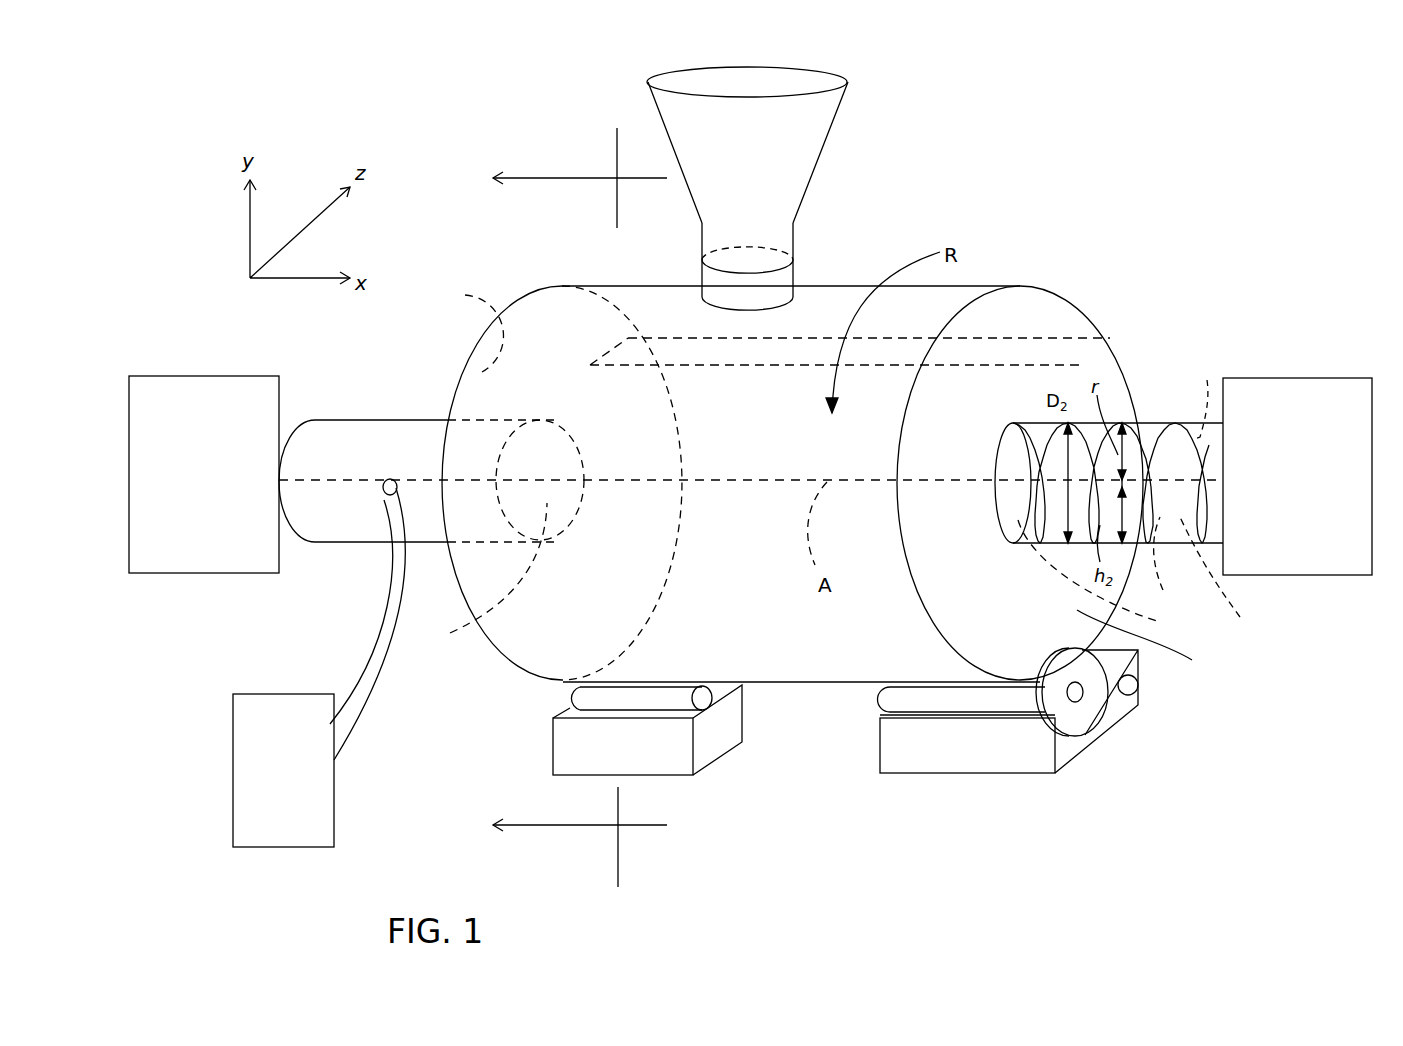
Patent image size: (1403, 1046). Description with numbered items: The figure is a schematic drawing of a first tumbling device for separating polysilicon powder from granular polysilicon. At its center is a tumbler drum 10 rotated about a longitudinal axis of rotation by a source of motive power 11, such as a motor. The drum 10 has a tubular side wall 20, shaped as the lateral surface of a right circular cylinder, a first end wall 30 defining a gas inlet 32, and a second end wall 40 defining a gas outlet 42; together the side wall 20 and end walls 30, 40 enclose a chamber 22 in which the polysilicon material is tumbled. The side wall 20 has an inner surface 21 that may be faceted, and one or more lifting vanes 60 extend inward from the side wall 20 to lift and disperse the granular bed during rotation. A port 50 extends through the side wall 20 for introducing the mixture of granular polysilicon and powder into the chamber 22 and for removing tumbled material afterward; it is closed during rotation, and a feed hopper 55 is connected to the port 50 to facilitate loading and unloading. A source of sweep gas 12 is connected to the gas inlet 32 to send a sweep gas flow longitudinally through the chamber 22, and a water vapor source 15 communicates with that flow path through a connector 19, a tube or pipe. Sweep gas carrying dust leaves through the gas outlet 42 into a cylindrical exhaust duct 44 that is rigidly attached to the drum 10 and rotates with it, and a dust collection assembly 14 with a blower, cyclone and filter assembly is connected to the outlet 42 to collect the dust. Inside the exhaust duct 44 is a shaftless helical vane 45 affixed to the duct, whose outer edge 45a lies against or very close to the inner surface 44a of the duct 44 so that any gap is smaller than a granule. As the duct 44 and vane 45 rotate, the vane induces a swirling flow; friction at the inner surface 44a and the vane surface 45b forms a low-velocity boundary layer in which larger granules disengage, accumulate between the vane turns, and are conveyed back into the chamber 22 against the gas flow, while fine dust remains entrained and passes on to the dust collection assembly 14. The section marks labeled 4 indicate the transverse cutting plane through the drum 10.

The section line 4- 4 is at (580, 507).
The tumbler drum 10 is at (992, 183).
The source of motive power 11 is at (1087, 707).
The source of sweep gas 12 is at (238, 374).
The dust collection assembly 14 is at (1262, 378).
The water vapor source 15 is at (290, 692).
The connector 19 is at (371, 634).
The side wall 20 is at (608, 285).
The inner surface 21 is at (858, 682).
The chamber 22 is at (747, 643).
The first end wall 30 is at (461, 331).
The gas inlet 32 is at (477, 592).
The second end wall 40 is at (1145, 652).
The gas outlet 42 is at (1105, 580).
The exhaust duct 44 is at (1172, 425).
The inner surface 44a is at (1207, 397).
The helical vane 45 is at (1193, 530).
The outer edge 45a is at (1228, 578).
The vane surface 45b is at (1179, 563).
The port 50 is at (795, 280).
The feed hopper 55 is at (813, 177).
The lifting vanes 60 is at (1090, 357).